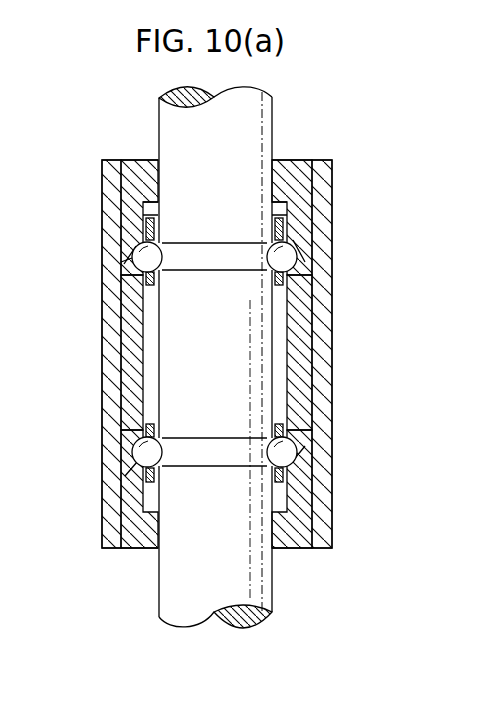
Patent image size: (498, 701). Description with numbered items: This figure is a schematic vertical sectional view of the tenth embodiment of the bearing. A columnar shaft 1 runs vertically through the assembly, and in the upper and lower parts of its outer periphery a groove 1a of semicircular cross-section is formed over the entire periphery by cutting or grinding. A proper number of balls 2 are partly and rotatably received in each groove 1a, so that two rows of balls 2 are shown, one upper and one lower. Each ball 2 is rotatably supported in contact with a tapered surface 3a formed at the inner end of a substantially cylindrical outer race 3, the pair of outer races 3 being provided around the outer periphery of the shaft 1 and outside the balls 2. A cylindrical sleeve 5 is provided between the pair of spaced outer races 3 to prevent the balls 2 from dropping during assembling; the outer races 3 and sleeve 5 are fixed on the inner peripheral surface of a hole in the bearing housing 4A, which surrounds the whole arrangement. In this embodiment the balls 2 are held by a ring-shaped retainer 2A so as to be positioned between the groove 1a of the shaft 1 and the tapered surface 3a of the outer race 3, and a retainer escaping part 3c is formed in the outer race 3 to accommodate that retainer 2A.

The shaft 1 is at (160, 119).
The groove 1a is at (165, 256).
The ball 2 is at (158, 272).
The retainer 2A is at (275, 232).
The outer race 3 is at (297, 170).
The tapered surface 3a is at (130, 264).
The retainer escaping part 3c is at (148, 209).
The bearing housing 4A is at (325, 330).
The sleeve 5 is at (307, 401).